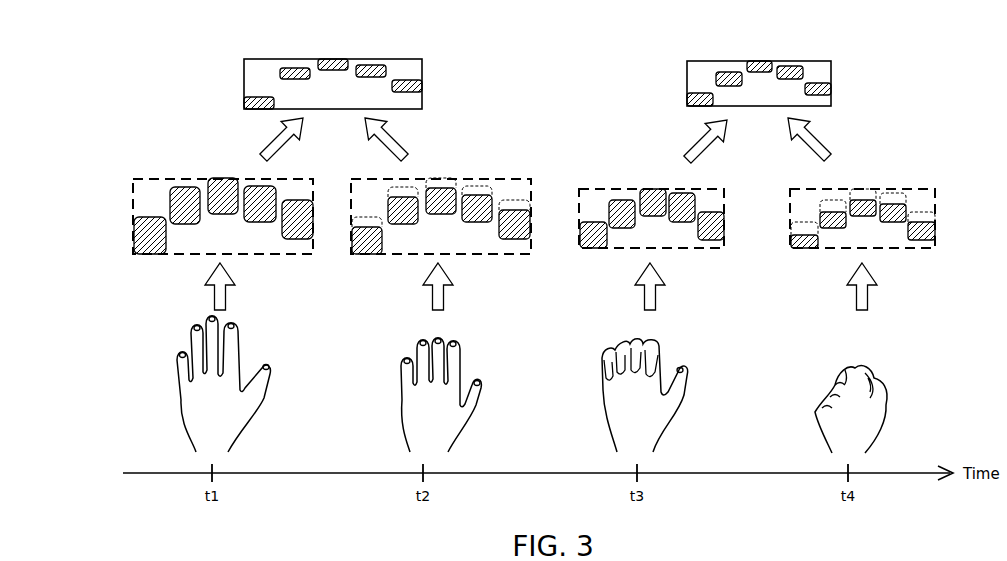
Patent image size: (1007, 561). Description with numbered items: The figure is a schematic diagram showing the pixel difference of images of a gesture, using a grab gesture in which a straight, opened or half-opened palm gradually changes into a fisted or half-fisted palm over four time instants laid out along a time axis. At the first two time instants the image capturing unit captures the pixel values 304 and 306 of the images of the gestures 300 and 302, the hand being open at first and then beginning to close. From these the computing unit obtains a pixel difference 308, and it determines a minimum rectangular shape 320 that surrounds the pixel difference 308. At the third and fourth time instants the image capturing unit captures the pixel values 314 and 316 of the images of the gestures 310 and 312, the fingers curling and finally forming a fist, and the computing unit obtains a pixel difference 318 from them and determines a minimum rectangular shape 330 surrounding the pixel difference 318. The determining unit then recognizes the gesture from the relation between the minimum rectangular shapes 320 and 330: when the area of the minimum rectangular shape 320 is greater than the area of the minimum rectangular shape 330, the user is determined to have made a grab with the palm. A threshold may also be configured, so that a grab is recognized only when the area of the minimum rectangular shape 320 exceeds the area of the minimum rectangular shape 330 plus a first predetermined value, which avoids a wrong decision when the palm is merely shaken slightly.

The gesture 300 is at (245, 345).
The gesture 302 is at (465, 345).
The pixel values 304 is at (189, 178).
The pixel values 306 is at (469, 178).
The pixel difference 308 is at (259, 97).
The gesture 310 is at (668, 345).
The gesture 312 is at (873, 365).
The pixel values 314 is at (625, 188).
The pixel values 316 is at (882, 188).
The pixel difference 318 is at (818, 83).
The minimum rectangular shape 320 is at (244, 78).
The minimum rectangular shape 330 is at (687, 80).